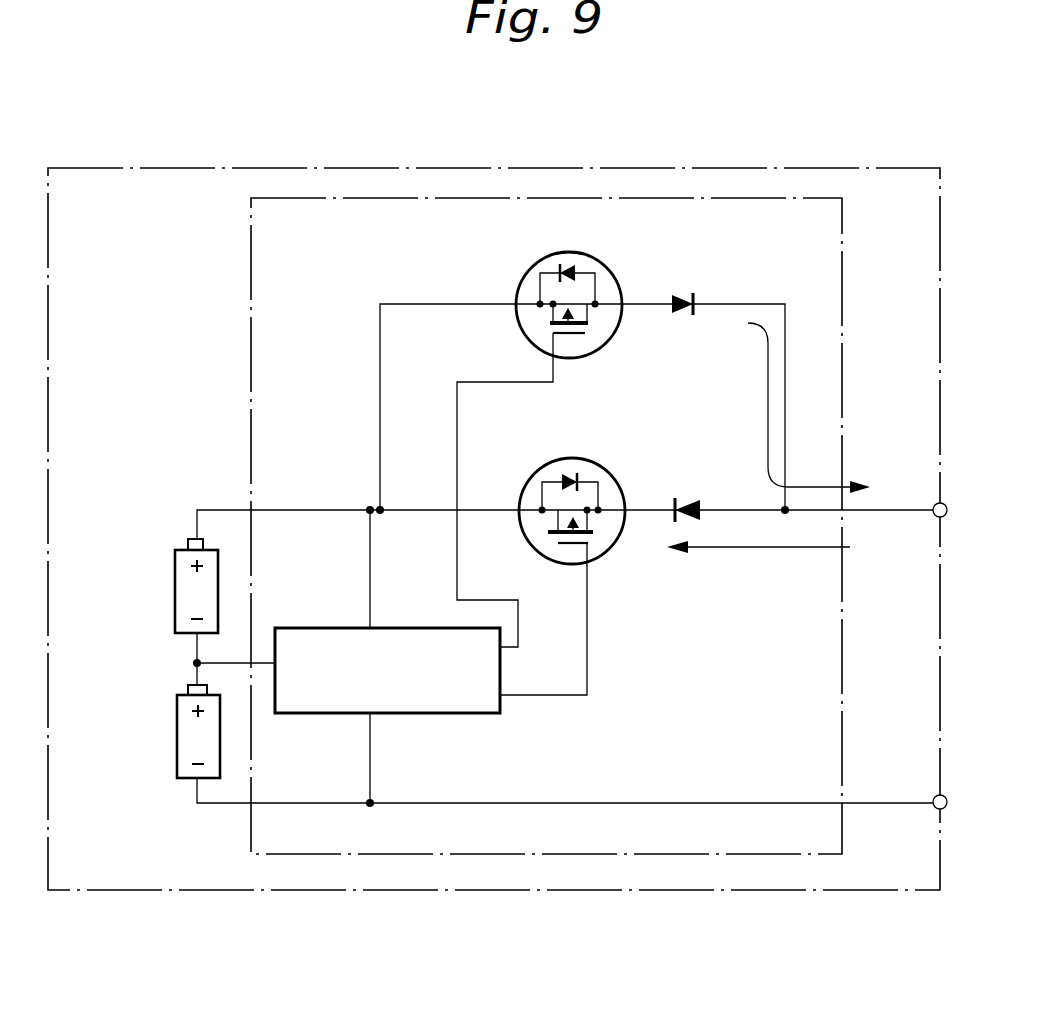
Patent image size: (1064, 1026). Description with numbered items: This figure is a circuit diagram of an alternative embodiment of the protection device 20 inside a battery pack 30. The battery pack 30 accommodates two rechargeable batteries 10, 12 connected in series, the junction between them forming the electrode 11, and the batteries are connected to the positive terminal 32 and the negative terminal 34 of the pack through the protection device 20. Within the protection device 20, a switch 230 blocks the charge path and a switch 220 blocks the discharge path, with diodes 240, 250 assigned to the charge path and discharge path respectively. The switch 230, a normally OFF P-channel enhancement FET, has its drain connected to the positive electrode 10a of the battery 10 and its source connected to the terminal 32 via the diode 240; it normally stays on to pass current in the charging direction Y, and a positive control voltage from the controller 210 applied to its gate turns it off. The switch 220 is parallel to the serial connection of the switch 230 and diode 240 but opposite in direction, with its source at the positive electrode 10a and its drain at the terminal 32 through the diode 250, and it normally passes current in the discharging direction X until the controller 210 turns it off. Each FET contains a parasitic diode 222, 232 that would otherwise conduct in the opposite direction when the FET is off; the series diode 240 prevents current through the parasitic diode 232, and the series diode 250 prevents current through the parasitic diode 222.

The battery pack 30 is at (775, 167).
The protection device 20 is at (842, 272).
The battery 10 is at (175, 590).
The positive electrode 10a is at (214, 508).
The negative electrode 11 is at (230, 663).
The battery 12 is at (177, 737).
The controller 210 is at (412, 628).
The switch 220 is at (598, 266).
The parasitic diode 222 is at (557, 268).
The switch 230 is at (612, 548).
The parasitic diode 232 is at (570, 468).
The diode 240 is at (688, 497).
The diode 250 is at (690, 296).
The positive terminal 32 is at (949, 510).
The negative terminal 34 is at (948, 801).
The discharging direction X is at (766, 397).
The charging direction Y is at (750, 550).